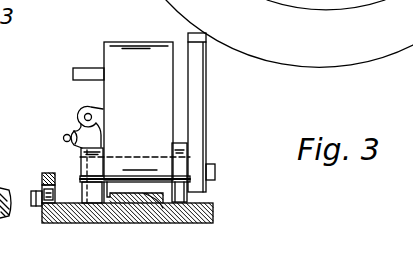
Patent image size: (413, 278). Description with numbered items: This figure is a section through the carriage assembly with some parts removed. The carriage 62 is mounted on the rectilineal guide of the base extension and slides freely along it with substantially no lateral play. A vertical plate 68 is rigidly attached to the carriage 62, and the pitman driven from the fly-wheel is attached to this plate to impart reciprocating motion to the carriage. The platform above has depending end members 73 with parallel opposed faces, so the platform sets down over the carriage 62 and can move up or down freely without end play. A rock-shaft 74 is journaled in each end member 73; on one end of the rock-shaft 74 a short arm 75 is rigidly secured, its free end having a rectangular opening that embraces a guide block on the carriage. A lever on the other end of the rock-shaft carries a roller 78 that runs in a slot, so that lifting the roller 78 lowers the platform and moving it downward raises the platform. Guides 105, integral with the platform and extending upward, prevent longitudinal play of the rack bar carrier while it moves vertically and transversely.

The guide 105 is at (117, 60).
The vertical plate 68 is at (197, 113).
The rock-shaft 74 is at (0, 146).
The depending end member 73 is at (81, 150).
The short arm 75 is at (187, 189).
The carriage 62 is at (213, 213).
The roller 78 is at (42, 205).